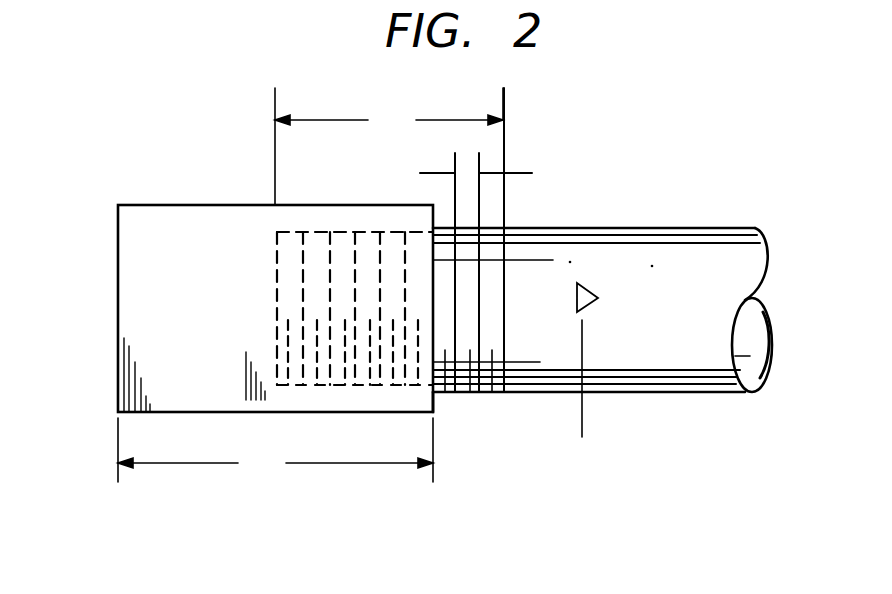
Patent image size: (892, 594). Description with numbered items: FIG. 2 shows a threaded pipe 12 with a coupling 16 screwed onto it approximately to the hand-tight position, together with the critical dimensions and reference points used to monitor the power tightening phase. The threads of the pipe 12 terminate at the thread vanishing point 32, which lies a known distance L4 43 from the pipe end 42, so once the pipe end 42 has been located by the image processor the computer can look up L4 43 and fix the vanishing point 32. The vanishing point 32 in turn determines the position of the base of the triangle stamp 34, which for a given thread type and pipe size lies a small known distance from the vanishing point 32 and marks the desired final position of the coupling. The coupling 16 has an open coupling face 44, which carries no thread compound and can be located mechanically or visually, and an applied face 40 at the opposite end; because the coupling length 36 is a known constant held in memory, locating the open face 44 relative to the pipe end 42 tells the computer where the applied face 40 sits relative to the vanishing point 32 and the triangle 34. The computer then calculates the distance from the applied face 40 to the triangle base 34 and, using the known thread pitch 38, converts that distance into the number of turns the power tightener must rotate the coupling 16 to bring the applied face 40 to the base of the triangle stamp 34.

The pipe 12 is at (708, 238).
The coupling 16 is at (173, 217).
The thread vanishing point 32 is at (504, 392).
The triangle stamp 34 is at (583, 423).
The coupling length 36 is at (275, 450).
The thread pitch 38 is at (467, 158).
The applied face 40 is at (437, 400).
The pipe end 42 is at (278, 315).
The length L4 43 is at (389, 146).
The open coupling face 44 is at (118, 365).